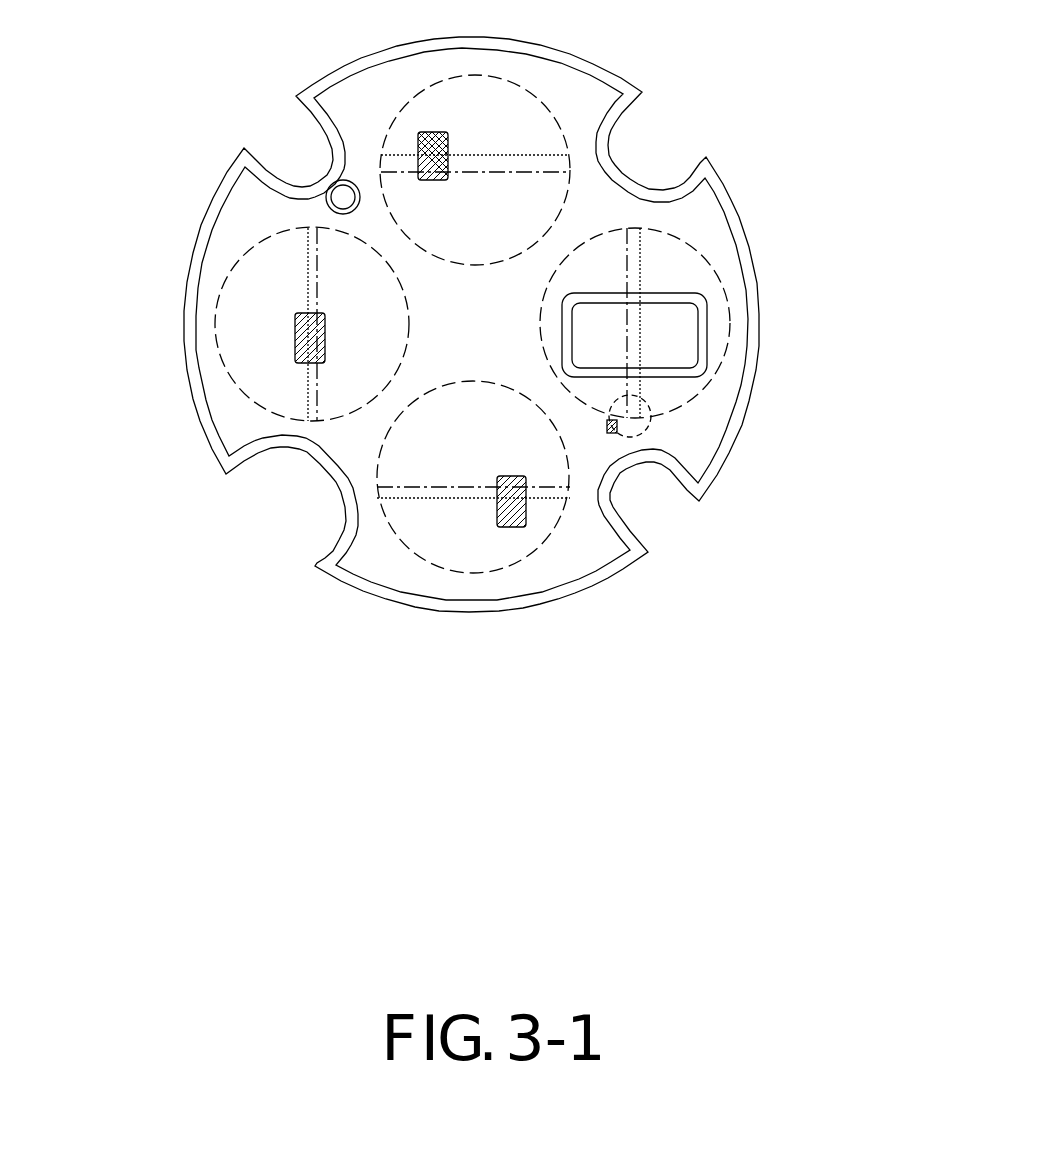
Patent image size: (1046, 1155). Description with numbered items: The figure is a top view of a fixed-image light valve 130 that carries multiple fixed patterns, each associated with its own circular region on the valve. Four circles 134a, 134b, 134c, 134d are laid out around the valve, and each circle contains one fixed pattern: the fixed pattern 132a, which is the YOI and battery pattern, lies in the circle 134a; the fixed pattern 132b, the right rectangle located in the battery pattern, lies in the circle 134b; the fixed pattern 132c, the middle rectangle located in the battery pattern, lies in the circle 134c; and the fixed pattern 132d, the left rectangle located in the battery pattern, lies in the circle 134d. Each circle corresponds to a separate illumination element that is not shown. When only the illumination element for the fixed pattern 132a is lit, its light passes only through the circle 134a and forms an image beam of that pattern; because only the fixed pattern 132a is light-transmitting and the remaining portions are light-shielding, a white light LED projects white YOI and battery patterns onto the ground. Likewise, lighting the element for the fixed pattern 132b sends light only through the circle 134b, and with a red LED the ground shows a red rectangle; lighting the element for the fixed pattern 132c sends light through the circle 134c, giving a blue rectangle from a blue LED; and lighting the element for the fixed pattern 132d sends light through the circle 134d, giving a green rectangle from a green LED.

The fixed-image light valve 130 is at (705, 160).
The fixed pattern 132a is at (707, 303).
The fixed pattern 132b is at (510, 527).
The fixed pattern 132c is at (296, 331).
The fixed pattern 132d is at (422, 133).
The circle 134a is at (703, 258).
The circle 134b is at (396, 527).
The circle 134c is at (276, 412).
The circle 134d is at (524, 90).